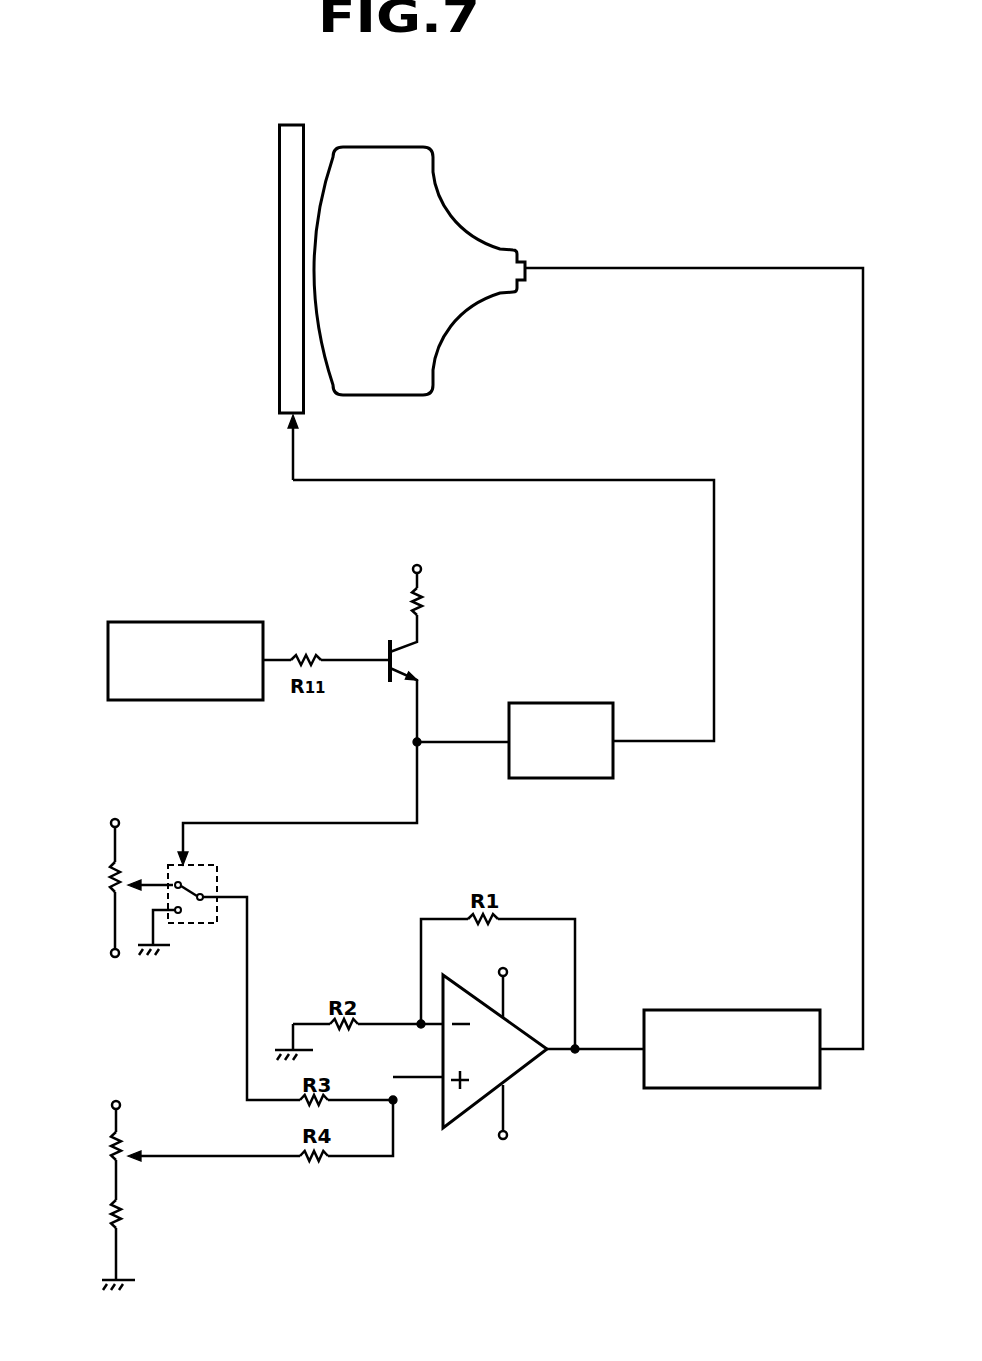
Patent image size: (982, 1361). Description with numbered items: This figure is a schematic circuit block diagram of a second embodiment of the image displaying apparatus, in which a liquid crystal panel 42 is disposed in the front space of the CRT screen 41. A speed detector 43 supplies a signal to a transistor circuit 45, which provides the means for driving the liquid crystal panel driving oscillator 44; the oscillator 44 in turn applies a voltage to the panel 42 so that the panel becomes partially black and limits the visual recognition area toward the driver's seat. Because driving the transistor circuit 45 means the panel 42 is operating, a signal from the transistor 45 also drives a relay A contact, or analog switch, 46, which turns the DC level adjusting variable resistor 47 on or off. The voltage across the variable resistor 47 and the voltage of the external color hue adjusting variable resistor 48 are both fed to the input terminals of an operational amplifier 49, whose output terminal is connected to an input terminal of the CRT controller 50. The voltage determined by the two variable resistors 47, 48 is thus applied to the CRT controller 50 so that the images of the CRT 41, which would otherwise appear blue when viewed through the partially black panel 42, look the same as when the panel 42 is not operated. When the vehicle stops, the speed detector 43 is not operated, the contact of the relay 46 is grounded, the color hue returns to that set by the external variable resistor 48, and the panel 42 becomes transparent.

The CRT screen 41 is at (443, 207).
The liquid crystal panel 42 is at (278, 181).
The speed detector 43 is at (226, 622).
The liquid crystal panel driving oscillator 44 is at (597, 703).
The transistor circuit 45 is at (427, 650).
The relay A contact (analog switch) 46 is at (218, 880).
The DC level adjusting variable resistor 47 is at (100, 871).
The external variable resistor 48 is at (100, 1140).
The operational amplifier 49 is at (460, 1122).
The CRT controller 50 is at (765, 1088).